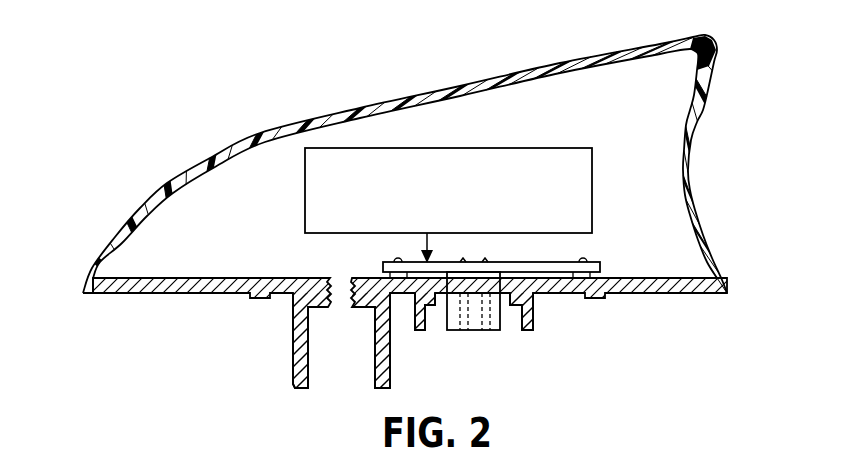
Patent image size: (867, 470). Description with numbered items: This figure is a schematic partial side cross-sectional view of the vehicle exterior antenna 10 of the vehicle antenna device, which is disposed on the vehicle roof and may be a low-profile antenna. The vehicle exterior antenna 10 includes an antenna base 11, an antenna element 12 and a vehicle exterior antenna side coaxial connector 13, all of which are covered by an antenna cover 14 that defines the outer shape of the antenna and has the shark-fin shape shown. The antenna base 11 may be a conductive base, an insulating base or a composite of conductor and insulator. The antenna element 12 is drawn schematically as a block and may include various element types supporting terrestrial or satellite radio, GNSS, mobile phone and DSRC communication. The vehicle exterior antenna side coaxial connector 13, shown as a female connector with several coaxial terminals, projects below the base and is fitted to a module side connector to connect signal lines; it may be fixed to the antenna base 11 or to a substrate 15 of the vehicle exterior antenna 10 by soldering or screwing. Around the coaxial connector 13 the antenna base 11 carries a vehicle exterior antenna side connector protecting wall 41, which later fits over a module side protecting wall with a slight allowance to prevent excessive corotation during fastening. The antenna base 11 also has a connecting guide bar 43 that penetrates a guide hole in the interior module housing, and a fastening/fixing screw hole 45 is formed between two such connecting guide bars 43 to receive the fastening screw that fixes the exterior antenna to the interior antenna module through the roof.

The vehicle exterior antenna 10 is at (146, 132).
The antenna base 11 is at (647, 283).
The antenna element 12 is at (592, 193).
The vehicle exterior antenna side coaxial connector 13 is at (497, 330).
The antenna cover 14 is at (690, 98).
The substrate 15 is at (600, 262).
The vehicle exterior antenna side connector protecting wall 41 is at (528, 318).
The connecting guide bar 43 is at (391, 368).
The fastening/fixing screw hole 45 is at (331, 302).